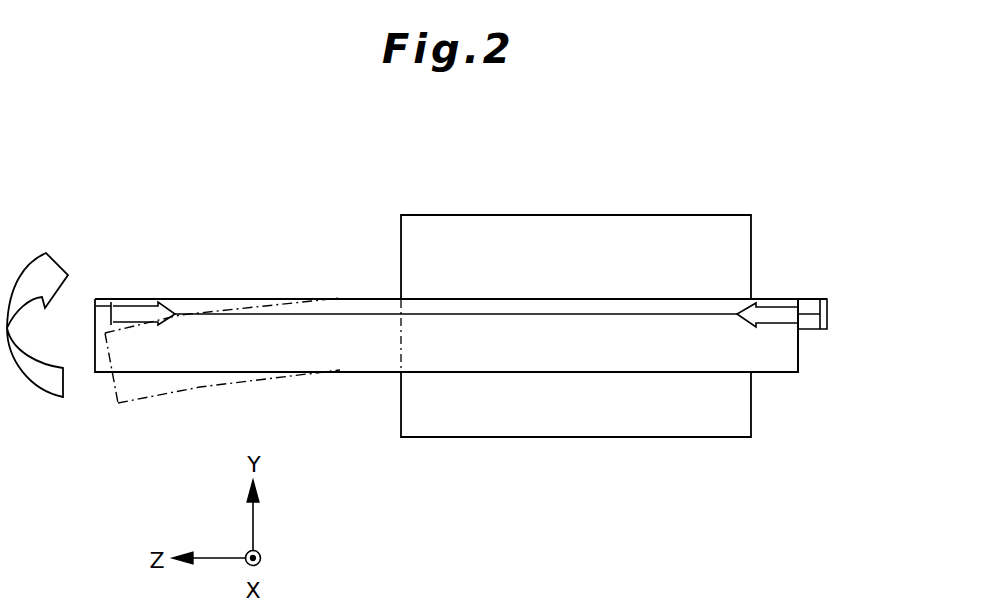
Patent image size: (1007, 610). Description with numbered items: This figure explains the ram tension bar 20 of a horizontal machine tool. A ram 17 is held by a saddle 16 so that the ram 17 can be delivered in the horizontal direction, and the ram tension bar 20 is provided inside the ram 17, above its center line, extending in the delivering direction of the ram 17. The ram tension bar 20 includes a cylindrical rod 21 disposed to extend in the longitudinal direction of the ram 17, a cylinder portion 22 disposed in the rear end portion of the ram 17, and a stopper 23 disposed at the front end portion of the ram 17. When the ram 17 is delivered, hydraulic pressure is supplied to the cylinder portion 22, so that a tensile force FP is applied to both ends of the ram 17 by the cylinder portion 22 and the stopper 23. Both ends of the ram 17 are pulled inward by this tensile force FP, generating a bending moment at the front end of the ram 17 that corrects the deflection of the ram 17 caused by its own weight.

The saddle 16 is at (518, 228).
The ram 17 is at (550, 357).
The ram tension bar 20 is at (812, 293).
The cylindrical rod 21 is at (350, 315).
The cylinder portion 22 is at (810, 323).
The stopper 23 is at (108, 303).
The tensile force FP is at (143, 310).